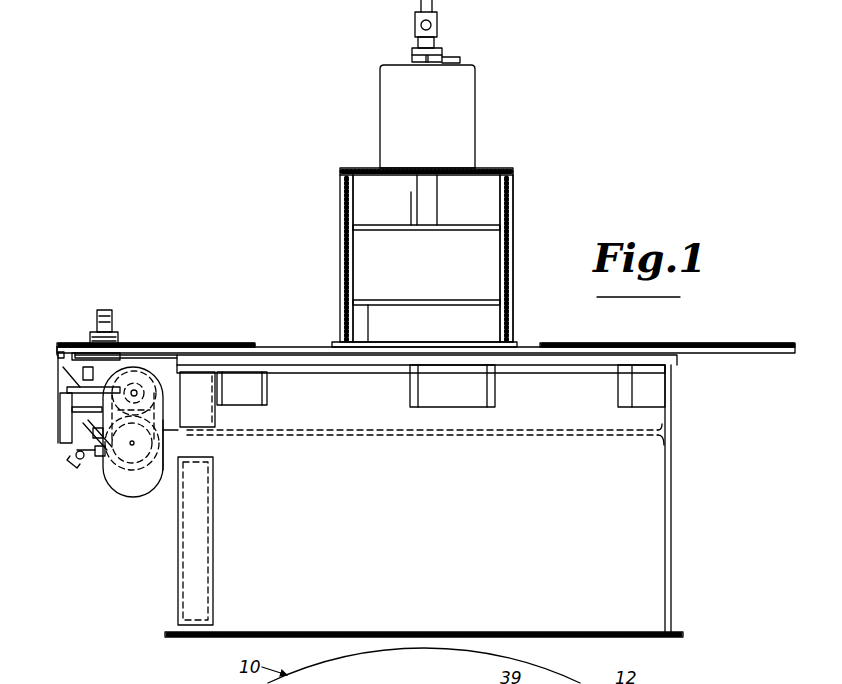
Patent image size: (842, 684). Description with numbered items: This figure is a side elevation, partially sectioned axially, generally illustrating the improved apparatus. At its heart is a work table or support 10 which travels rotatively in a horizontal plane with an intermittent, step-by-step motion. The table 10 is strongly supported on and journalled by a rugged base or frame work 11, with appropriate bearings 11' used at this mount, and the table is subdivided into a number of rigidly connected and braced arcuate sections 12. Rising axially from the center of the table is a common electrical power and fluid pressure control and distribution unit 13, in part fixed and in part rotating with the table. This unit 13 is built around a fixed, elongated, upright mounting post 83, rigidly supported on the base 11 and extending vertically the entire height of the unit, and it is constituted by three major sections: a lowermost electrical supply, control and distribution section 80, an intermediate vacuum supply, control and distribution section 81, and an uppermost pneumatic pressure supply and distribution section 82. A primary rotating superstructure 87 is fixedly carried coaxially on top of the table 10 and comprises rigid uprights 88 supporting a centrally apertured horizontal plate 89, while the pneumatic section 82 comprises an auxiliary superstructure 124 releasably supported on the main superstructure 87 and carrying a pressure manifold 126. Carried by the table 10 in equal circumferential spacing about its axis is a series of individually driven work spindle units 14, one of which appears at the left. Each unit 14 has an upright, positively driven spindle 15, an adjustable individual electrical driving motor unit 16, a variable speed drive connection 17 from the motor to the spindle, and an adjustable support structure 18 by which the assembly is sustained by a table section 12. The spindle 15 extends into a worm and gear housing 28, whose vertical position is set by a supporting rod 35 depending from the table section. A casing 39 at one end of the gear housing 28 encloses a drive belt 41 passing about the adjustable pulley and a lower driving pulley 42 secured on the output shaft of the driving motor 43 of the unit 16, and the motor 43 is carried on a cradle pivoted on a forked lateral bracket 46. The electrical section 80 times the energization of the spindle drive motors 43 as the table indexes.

The work table 10 is at (289, 345).
The base 11 is at (437, 501).
The bearings 11' is at (441, 387).
The arcuate sections 12 is at (158, 345).
The control and distribution unit 13 is at (514, 258).
The work spindle unit 14 is at (112, 493).
The spindle 15 is at (108, 310).
The driving motor unit 16 is at (92, 468).
The variable speed drive connection 17 is at (158, 482).
The support structure 18 is at (53, 399).
The worm and gear housing 28 is at (65, 355).
The supporting rod 35 is at (63, 378).
The casing 39 is at (158, 433).
The drive belt 41 is at (153, 408).
The driving pulley 42 is at (146, 374).
The driving motor 43 is at (131, 490).
The lateral bracket 46 is at (82, 457).
The electrical supply, control and distribution section 80 is at (491, 226).
The vacuum supply, control and distribution section 81 is at (479, 118).
The pneumatic pressure supply and distribution section 82 is at (438, 36).
The mounting post 83 is at (428, 203).
The rotating superstructure 87 is at (515, 307).
The uprights 88 is at (350, 255).
The horizontal plate 89 is at (388, 298).
The auxiliary superstructure 124 is at (460, 152).
The pressure manifold 126 is at (448, 55).